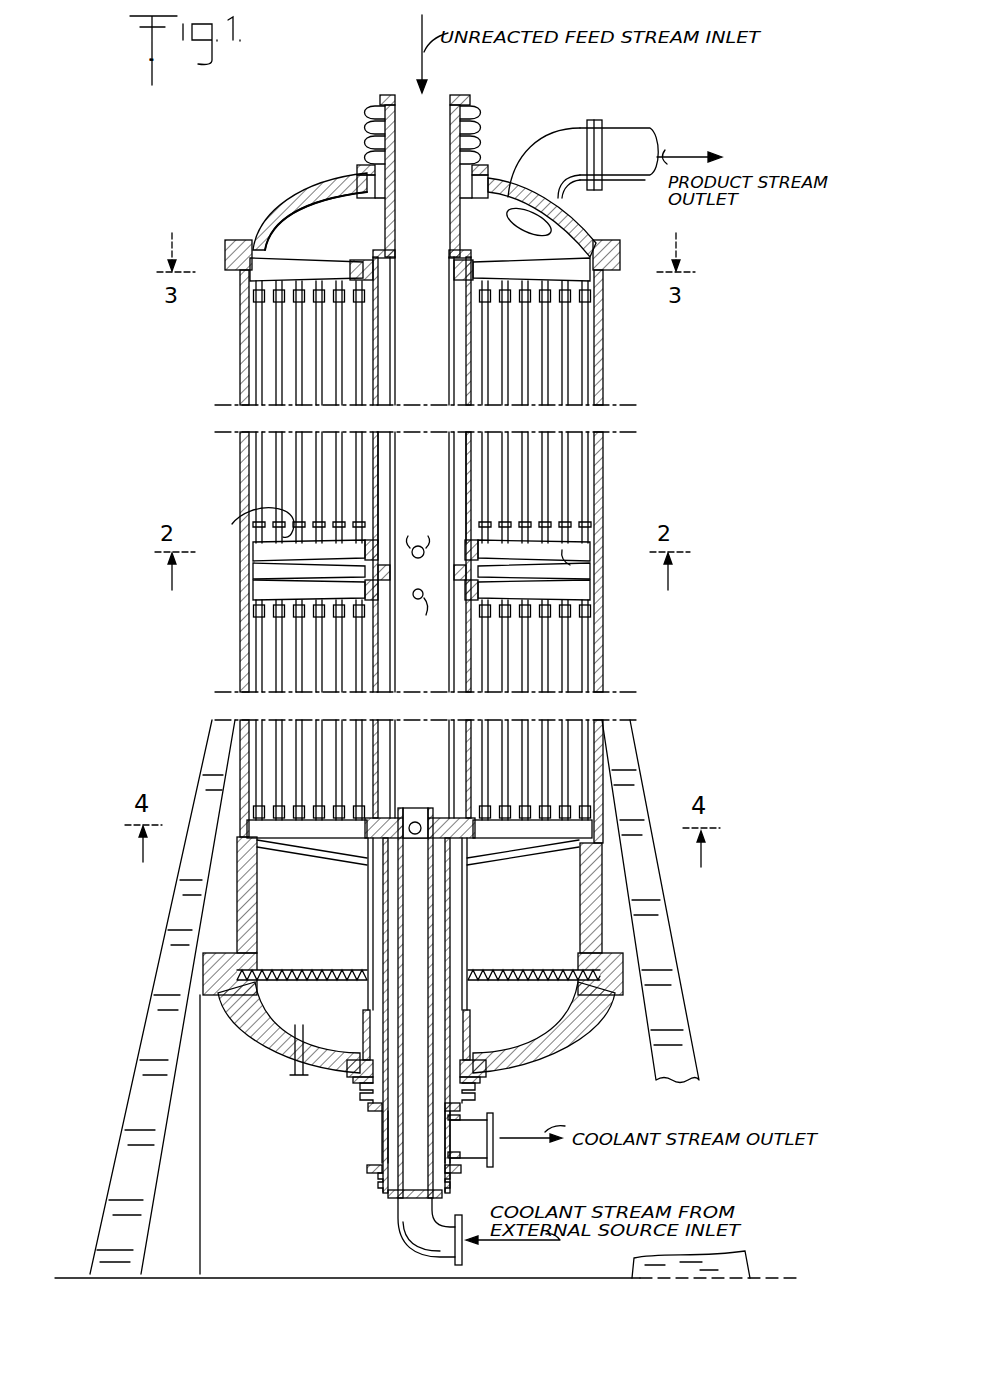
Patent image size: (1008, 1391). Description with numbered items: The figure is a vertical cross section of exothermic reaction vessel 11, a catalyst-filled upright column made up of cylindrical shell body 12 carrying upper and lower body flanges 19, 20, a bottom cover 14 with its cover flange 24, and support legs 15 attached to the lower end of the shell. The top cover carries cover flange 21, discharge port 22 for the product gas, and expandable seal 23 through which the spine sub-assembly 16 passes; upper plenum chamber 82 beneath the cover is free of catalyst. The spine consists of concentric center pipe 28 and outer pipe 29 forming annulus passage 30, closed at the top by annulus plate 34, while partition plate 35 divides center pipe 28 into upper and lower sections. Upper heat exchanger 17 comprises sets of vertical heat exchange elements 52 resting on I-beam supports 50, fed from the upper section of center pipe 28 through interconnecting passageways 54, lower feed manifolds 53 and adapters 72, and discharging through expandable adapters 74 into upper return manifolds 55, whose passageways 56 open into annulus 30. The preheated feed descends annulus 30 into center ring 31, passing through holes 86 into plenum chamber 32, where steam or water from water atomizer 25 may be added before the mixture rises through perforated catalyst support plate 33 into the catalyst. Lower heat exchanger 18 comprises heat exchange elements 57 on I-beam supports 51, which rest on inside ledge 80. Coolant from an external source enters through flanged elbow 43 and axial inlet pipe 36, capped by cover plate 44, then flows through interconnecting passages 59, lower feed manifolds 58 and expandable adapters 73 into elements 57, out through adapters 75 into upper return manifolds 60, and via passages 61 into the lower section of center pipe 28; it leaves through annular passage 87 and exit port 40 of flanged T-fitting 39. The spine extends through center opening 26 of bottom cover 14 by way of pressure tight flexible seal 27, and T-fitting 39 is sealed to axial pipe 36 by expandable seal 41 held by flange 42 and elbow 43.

The exothermic reaction vessel 11 is at (326, 200).
The upper plenum chamber 82 is at (295, 218).
The circumferential cover flange 21 is at (233, 240).
The circumferential body flange 19 is at (240, 278).
The expandable adapter 74 is at (604, 298).
The vertical heat exchange element 52 is at (252, 445).
The adapter 72 is at (604, 530).
The expandable adapter 73 is at (600, 798).
The vertical heat exchange element 57 is at (590, 745).
The circumferential body flange 20 is at (208, 953).
The plenum chamber 32 is at (288, 972).
The perforated catalyst support plate 33 is at (524, 972).
The expandable seal 23 is at (472, 106).
The spine sub-assembly 16 is at (481, 142).
The annulus plate 34 is at (378, 252).
The discharge port 22 is at (552, 134).
The center pipe 28 is at (396, 318).
The outer pipe 29 is at (380, 380).
The annulus passage 30 is at (384, 458).
The upper return manifold 55 is at (304, 266).
The interconnecting passageway 56 is at (356, 266).
The upper heat exchanger 17 is at (262, 360).
The lower heat exchanger 18 is at (262, 650).
The expandable adapter 75 is at (592, 612).
The cylindrical shell body 12 is at (618, 422).
The I-beam support 50 is at (252, 570).
The upper return manifold 60 is at (254, 598).
The lower feed manifold 53 is at (612, 568).
The interconnecting passageway 54 is at (418, 545).
The partition plate 35 is at (416, 600).
The interconnecting passage 61 is at (440, 605).
The lower feed manifold 58 is at (250, 830).
The I-beam support 51 is at (278, 850).
The inside ledge 80 is at (580, 855).
The cover plate 44 is at (410, 806).
The interconnecting passage 59 is at (432, 806).
The axial inlet pipe 36 is at (396, 872).
The annular passage 87 is at (392, 904).
The circumferential cover flange 24 is at (228, 1000).
The bottom cover 14 is at (558, 1038).
The holes 86 is at (360, 1026).
The center ring 31 is at (472, 1008).
The water atomizer 25 is at (292, 1062).
The center opening 26 is at (362, 1084).
The pressure tight flexible seal 27 is at (368, 1106).
The flanged T-fitting 39 is at (380, 1130).
The flange 42 is at (370, 1168).
The expandable seal 41 is at (386, 1196).
The flanged elbow 43 is at (400, 1226).
The exit port 40 is at (468, 1160).
The support legs 15 is at (130, 1090).